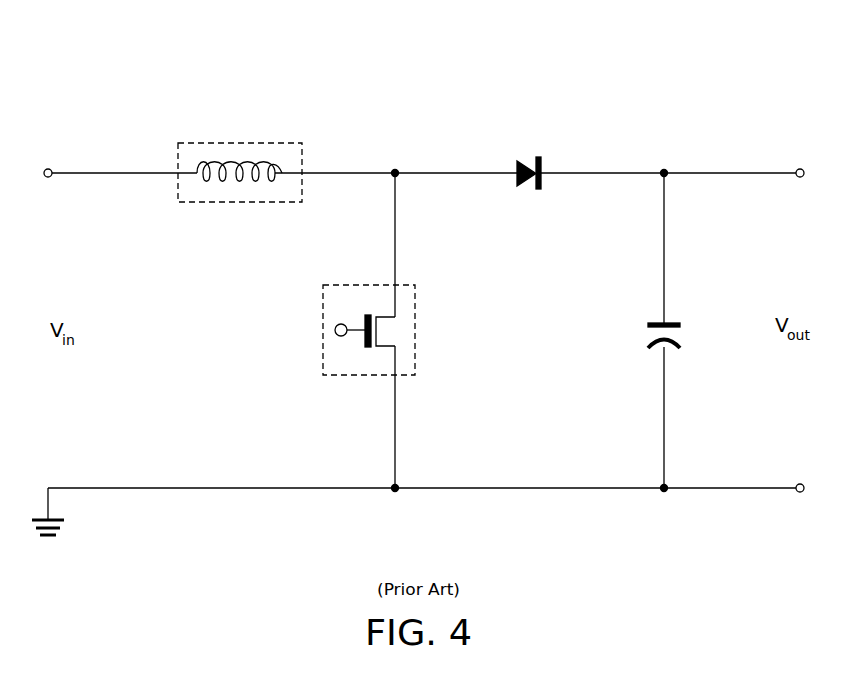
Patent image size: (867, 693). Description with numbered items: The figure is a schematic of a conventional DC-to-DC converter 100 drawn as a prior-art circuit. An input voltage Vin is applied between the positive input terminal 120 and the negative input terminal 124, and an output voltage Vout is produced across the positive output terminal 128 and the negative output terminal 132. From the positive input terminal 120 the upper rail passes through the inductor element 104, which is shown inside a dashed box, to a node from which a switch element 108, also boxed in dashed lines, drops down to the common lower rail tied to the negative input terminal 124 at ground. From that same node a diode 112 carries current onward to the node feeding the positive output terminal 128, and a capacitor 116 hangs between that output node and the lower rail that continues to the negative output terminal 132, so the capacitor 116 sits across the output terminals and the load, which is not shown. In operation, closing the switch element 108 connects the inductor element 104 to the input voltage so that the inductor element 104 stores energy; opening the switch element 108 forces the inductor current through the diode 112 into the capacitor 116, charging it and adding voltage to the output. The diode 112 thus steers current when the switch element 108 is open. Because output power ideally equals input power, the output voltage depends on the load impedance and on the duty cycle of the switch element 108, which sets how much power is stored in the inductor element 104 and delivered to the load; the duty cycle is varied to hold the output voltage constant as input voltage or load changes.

The DC-to-DC converter 100 is at (745, 42).
The inductor element 104 is at (289, 144).
The switch element 108 is at (404, 285).
The diode 112 is at (539, 157).
The capacitor 116 is at (672, 324).
The positive input terminal 120 is at (48, 168).
The negative input terminal 124 is at (48, 500).
The positive output terminal 128 is at (800, 168).
The negative output terminal 132 is at (800, 493).